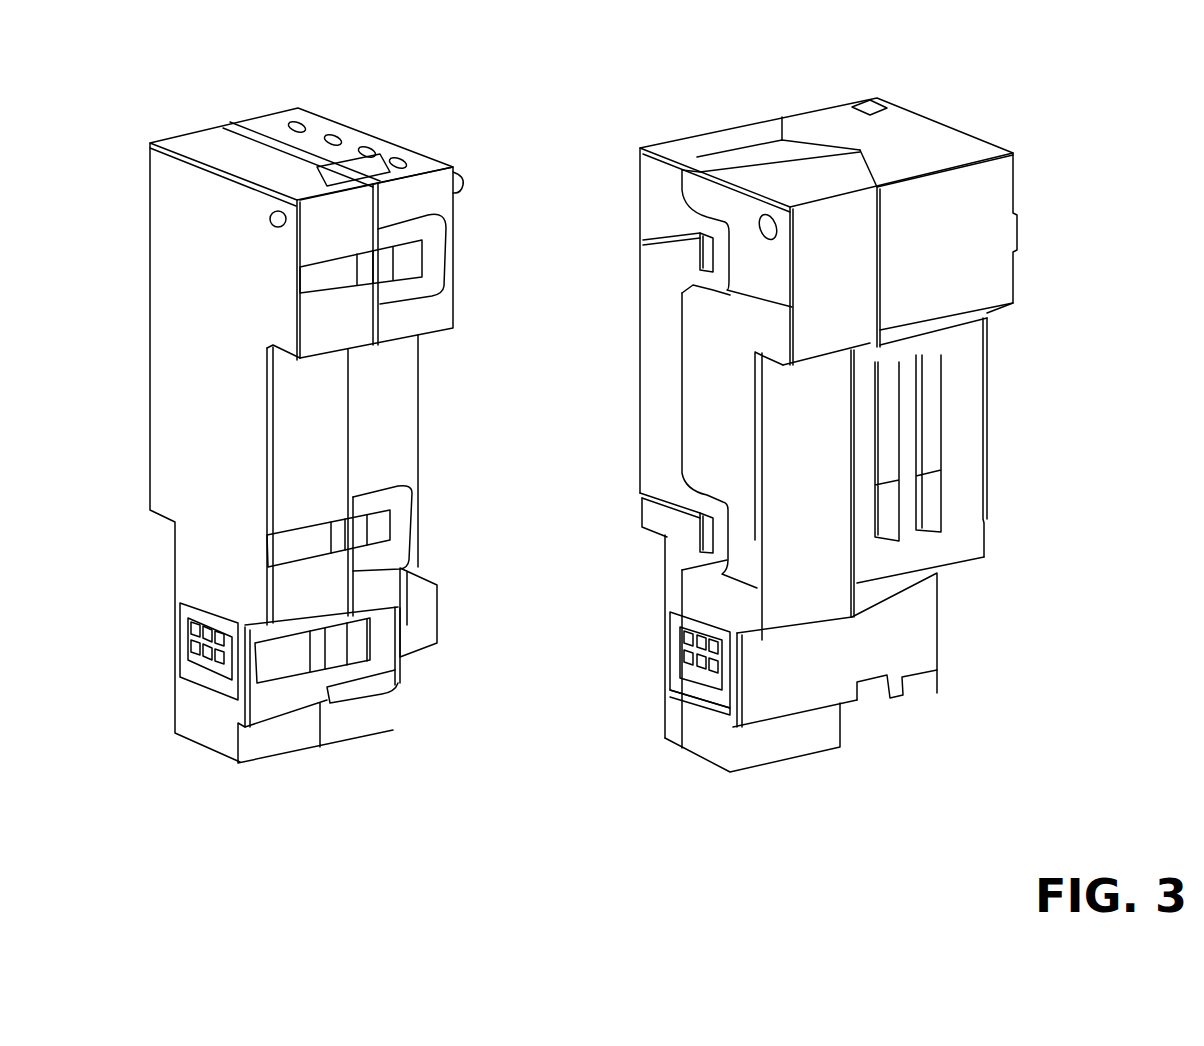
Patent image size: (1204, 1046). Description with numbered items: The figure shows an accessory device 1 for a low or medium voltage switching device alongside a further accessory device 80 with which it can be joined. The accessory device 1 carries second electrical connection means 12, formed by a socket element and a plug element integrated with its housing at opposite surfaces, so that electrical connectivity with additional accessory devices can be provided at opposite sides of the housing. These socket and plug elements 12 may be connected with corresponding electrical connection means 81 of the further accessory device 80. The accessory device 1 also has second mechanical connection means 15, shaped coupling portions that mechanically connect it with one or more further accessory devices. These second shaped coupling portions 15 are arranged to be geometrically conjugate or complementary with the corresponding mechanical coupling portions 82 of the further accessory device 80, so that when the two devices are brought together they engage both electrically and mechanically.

The accessory device 1 is at (358, 89).
The second electrical connection means 12 is at (448, 576).
The second mechanical connection means 15 is at (472, 165).
The further accessory device 80 is at (974, 116).
The electrical connection means 81 is at (676, 663).
The mechanical coupling portions 82 is at (748, 211).